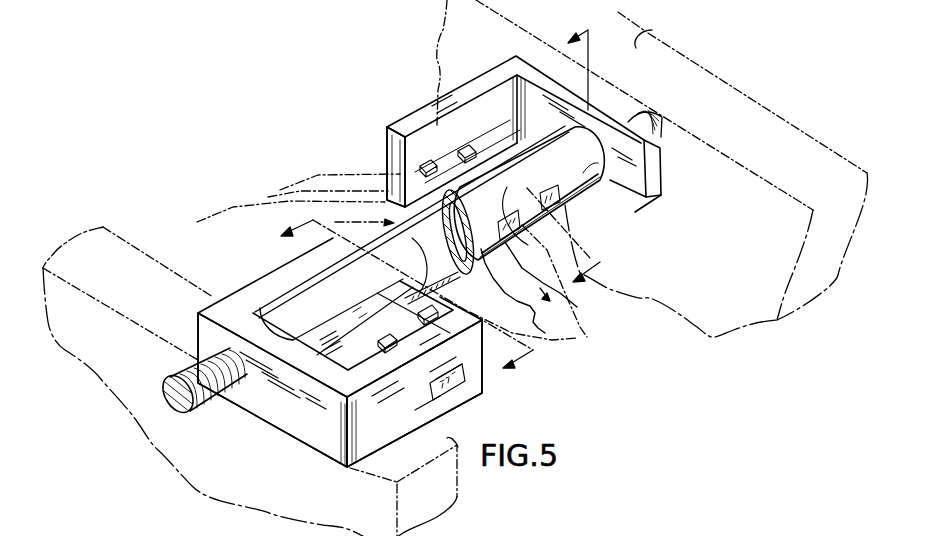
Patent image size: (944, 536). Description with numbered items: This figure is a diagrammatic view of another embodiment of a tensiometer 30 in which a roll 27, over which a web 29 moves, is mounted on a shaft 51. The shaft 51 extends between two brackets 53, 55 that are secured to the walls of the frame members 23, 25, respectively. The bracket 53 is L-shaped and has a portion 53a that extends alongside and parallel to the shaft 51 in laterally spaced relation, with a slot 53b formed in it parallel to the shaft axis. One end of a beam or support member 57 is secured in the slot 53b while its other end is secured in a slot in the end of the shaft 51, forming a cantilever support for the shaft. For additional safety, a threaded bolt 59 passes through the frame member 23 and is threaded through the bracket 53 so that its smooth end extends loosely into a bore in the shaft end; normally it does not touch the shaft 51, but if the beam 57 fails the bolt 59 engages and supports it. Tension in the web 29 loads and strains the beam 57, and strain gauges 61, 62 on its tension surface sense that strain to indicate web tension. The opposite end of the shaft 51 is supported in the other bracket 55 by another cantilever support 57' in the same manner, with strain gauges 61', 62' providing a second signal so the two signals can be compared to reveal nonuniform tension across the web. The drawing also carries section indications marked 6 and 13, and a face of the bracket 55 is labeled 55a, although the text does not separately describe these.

The section line 13- 13 is at (565, 162).
The frame member 23 is at (142, 262).
The frame member 25 is at (660, 29).
The roll 27 is at (515, 326).
The web 29 is at (576, 340).
The tensiometer 30 is at (250, 249).
The section line 6- 6 is at (399, 306).
The shaft 51 is at (313, 278).
The bracket 53 is at (240, 305).
The portion 53a is at (392, 430).
The slot 53b is at (466, 387).
The bracket 55 is at (508, 58).
The end face of upper clamp housing 55a is at (398, 120).
The beam 57 is at (362, 319).
The cantilever support 57' is at (533, 193).
The threaded bolt 59 is at (205, 396).
The strain gauge 61 is at (362, 316).
The strain gauge 61' is at (419, 125).
The strain gauge 62 is at (408, 289).
The strain gauge 62' is at (483, 137).